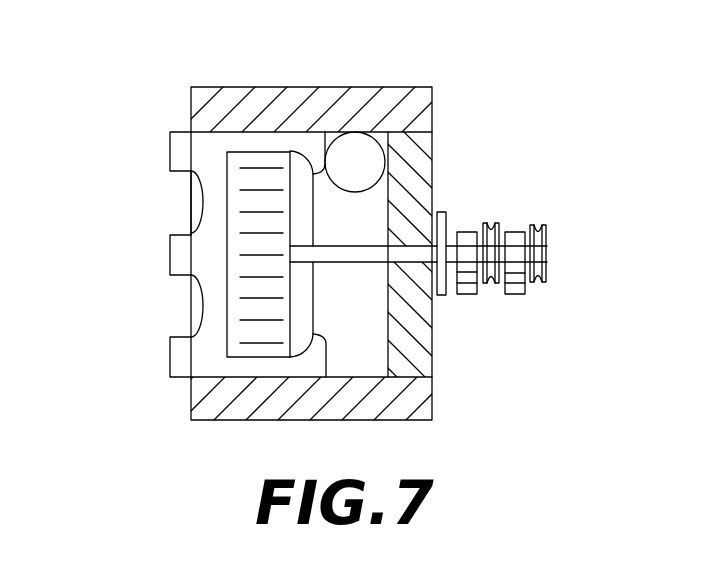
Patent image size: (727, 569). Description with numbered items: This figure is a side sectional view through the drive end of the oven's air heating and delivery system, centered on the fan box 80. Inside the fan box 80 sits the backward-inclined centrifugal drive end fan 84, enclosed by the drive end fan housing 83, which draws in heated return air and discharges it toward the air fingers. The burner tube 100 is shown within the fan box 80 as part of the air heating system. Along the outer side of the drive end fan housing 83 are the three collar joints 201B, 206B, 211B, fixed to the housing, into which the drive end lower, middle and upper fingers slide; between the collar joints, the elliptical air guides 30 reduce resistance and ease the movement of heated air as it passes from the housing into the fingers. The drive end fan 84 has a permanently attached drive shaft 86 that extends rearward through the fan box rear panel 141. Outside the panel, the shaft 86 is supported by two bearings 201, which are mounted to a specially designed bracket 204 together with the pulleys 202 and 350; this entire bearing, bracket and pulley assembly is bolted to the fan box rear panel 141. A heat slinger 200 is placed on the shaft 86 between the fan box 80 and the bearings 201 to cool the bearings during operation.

The fan box 80 is at (312, 87).
The backward-inclined centrifugal drive end fan 84 is at (267, 152).
The collar joint 211B is at (170, 153).
The drive end fan housing 83 is at (190, 182).
The elliptical air guide 30 is at (194, 217).
The collar joint 206B is at (170, 255).
The collar joint 201B is at (170, 357).
The burner tube 100 is at (372, 176).
The drive shaft 86 is at (362, 263).
The fan box rear panel 141 is at (432, 357).
The heat slinger 200 is at (442, 212).
The bearing 201 is at (466, 232).
The pulley 202 is at (491, 223).
The bracket 204 is at (468, 295).
The pulley 350 is at (547, 232).